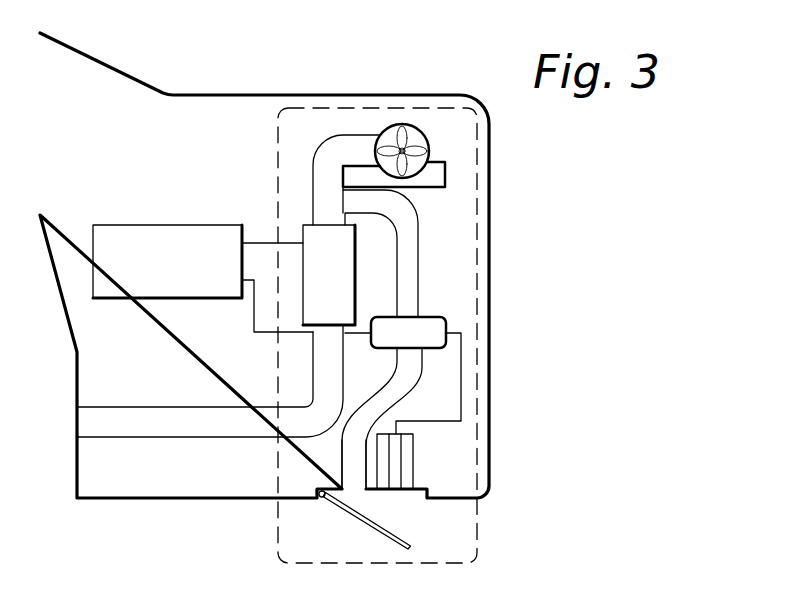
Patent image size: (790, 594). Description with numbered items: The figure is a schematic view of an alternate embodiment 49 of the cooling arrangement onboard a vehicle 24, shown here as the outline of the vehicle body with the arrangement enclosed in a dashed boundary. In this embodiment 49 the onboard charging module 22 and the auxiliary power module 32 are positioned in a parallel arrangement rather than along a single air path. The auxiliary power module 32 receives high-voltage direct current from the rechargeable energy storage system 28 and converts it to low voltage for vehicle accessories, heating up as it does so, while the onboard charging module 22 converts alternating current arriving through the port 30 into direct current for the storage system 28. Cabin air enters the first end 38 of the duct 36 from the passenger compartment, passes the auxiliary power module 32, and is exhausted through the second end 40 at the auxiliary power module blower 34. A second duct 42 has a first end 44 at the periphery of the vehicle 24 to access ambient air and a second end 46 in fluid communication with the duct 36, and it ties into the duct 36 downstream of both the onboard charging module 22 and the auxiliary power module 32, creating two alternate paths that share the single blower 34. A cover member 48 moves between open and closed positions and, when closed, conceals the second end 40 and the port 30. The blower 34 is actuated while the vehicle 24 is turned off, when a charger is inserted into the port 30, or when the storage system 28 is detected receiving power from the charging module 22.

The onboard charging module 22 is at (440, 303).
The vehicle 24 is at (490, 183).
The rechargeable energy storage system 28 is at (150, 225).
The port 30 is at (414, 448).
The auxiliary power module 32 is at (354, 295).
The auxiliary power module blower 34 is at (419, 188).
The duct 36 is at (170, 406).
The first end 38 is at (80, 420).
The second end 40 is at (376, 127).
The duct 42 is at (418, 378).
The first end 44 is at (340, 488).
The second end 46 is at (346, 214).
The cover member 48 is at (358, 522).
The alternate embodiment 49 is at (275, 152).